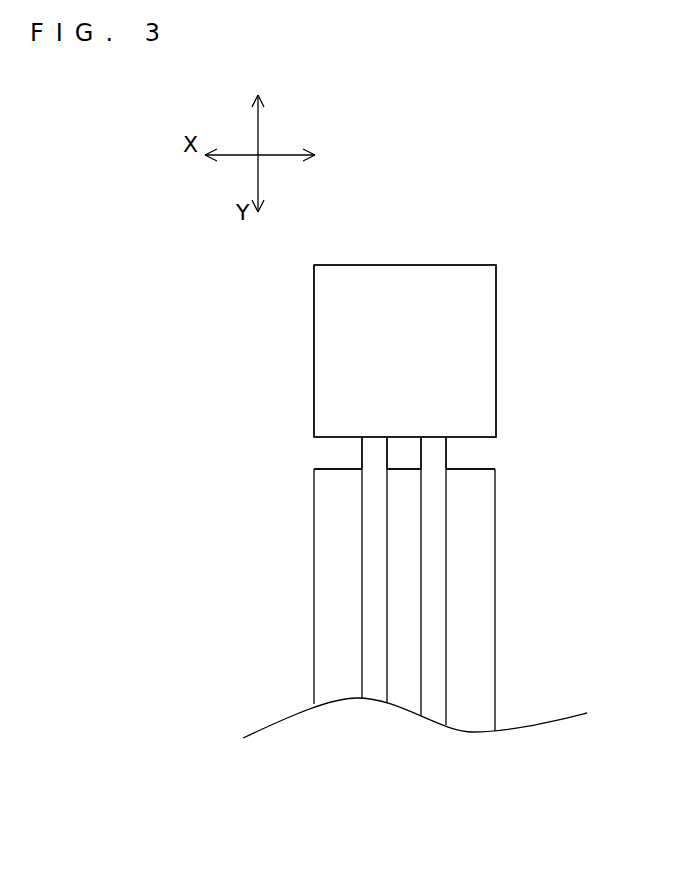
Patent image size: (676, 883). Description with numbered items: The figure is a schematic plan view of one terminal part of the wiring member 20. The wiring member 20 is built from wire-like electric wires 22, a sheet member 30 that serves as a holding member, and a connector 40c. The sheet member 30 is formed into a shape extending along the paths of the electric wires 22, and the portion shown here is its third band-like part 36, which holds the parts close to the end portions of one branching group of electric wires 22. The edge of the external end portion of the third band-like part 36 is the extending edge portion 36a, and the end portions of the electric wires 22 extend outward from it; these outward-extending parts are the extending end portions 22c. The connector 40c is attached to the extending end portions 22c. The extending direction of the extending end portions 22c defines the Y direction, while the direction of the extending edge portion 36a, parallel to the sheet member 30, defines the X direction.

The wiring member 20 is at (438, 238).
The connector 40c is at (496, 340).
The electric wires 22 is at (420, 616).
The extending end portions 22c is at (364, 442).
The third band-like part 36 is at (495, 585).
The extending edge portion 36a is at (495, 469).
The sheet member 30 is at (495, 665).